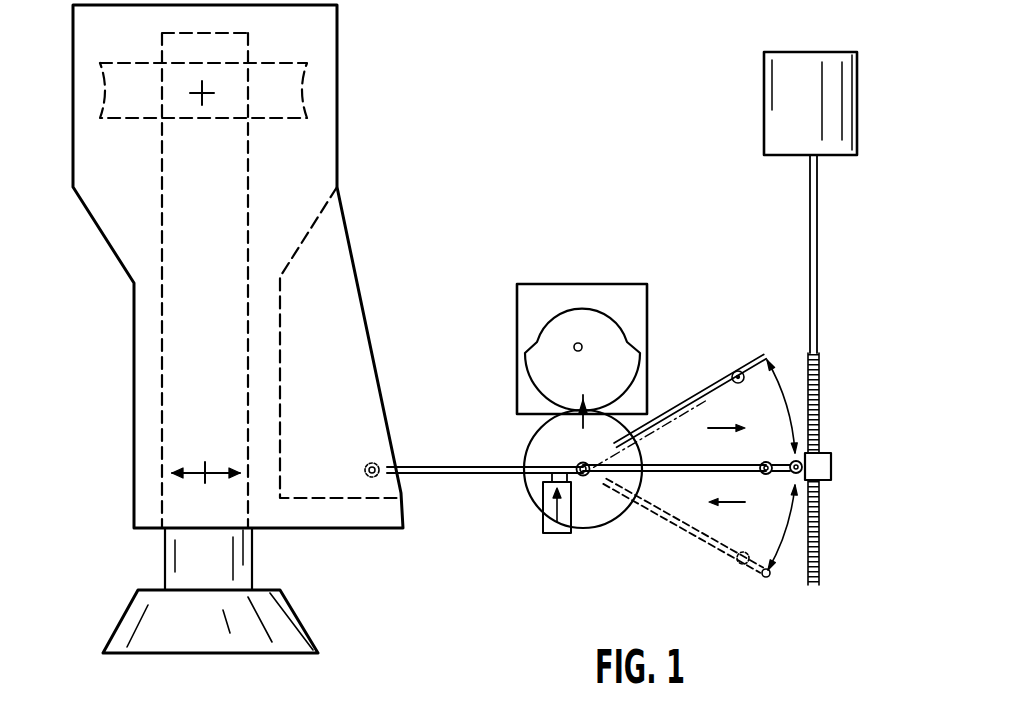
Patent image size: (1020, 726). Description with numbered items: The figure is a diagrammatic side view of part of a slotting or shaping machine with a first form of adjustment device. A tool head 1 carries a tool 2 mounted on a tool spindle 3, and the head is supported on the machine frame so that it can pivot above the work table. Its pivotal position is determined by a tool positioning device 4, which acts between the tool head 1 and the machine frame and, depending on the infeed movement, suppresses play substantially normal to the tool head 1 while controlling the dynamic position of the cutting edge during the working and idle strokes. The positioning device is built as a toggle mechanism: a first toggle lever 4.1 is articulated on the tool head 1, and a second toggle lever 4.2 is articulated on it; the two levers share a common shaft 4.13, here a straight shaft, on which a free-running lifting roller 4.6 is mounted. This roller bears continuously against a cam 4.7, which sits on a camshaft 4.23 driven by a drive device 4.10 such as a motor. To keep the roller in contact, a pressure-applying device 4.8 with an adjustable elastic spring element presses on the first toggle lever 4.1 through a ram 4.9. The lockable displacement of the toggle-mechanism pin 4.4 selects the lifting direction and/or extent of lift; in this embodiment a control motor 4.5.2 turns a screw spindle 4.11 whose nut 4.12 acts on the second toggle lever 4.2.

The tool head 1 is at (120, 455).
The tool 2 is at (213, 633).
The tool spindle 3 is at (187, 553).
The tool positioning device 4 is at (495, 283).
The first toggle lever 4.1 is at (447, 463).
The second toggle lever 4.2 is at (676, 463).
The toggle-mechanism pin 4.4 is at (737, 371).
The control motor 4.5.2 is at (778, 87).
The lifting roller 4.6 is at (613, 503).
The cam 4.7 is at (541, 347).
The pressure-applying device 4.8 is at (550, 478).
The ram 4.9 is at (548, 522).
The drive device 4.10 is at (640, 307).
The screw spindle 4.11 is at (823, 407).
The nut 4.12 is at (830, 467).
The common shaft 4.13 is at (585, 477).
The camshaft 4.23 is at (578, 342).